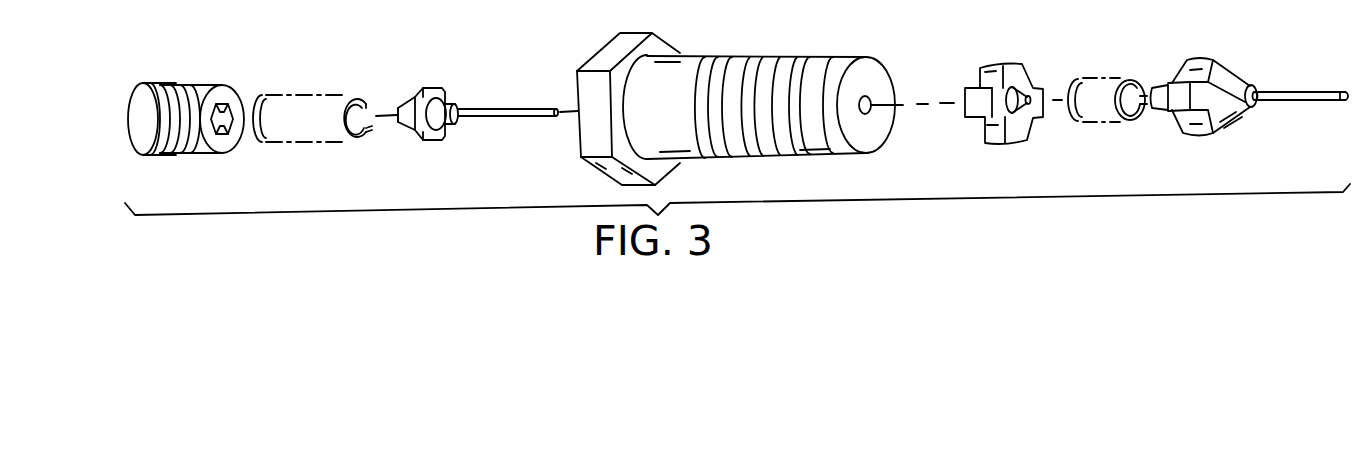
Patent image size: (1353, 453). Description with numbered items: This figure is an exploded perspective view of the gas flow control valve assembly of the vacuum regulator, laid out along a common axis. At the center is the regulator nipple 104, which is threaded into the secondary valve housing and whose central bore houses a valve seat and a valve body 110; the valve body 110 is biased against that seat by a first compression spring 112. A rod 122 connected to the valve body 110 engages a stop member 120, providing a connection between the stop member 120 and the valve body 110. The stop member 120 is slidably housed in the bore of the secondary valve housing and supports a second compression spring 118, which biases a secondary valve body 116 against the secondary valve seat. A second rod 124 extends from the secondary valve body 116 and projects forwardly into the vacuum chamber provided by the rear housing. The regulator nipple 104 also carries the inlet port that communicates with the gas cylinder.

The regulator nipple 104 is at (692, 63).
The valve body 110 is at (446, 103).
The first compression spring 112 is at (360, 97).
The secondary valve body 116 is at (1221, 67).
The second compression spring 118 is at (1099, 82).
The stop member 120 is at (1018, 132).
The rod 122 is at (520, 107).
The second rod 124 is at (1307, 91).